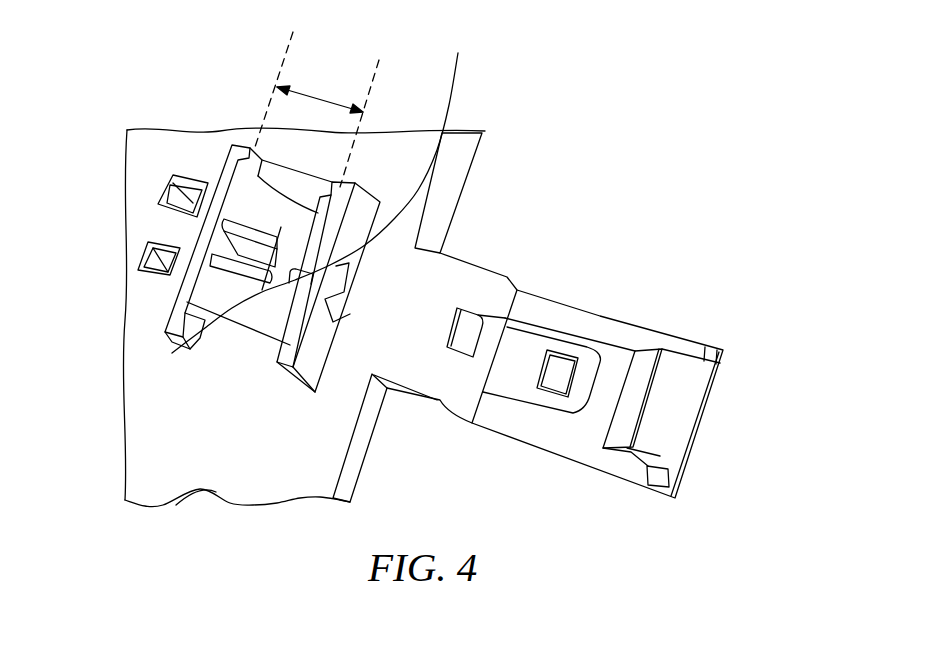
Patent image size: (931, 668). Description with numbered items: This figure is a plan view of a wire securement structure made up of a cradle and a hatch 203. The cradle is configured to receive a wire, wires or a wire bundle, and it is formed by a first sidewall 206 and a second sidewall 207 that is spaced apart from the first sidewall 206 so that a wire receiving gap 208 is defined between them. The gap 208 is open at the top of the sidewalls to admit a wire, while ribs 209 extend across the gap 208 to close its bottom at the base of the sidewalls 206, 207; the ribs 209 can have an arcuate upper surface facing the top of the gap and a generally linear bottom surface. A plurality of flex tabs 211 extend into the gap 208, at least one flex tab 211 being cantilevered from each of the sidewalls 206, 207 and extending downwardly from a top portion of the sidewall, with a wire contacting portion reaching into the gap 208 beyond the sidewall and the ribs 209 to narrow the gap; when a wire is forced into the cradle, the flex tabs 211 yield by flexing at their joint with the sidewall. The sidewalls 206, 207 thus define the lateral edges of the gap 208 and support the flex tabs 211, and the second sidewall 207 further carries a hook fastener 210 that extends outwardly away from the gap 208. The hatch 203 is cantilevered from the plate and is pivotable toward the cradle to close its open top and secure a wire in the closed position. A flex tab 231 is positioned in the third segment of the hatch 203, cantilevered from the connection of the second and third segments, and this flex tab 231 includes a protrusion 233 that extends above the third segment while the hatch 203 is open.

The hatch 203 is at (737, 358).
The first sidewall 206 is at (348, 195).
The second sidewall 207 is at (245, 143).
The wire receiving gap 208 is at (318, 96).
The ribs 209 is at (178, 351).
The hook fastener 210 is at (175, 177).
The flex tabs 211 is at (83, 207).
The flex tab 231 is at (513, 377).
The protrusion 233 is at (565, 367).